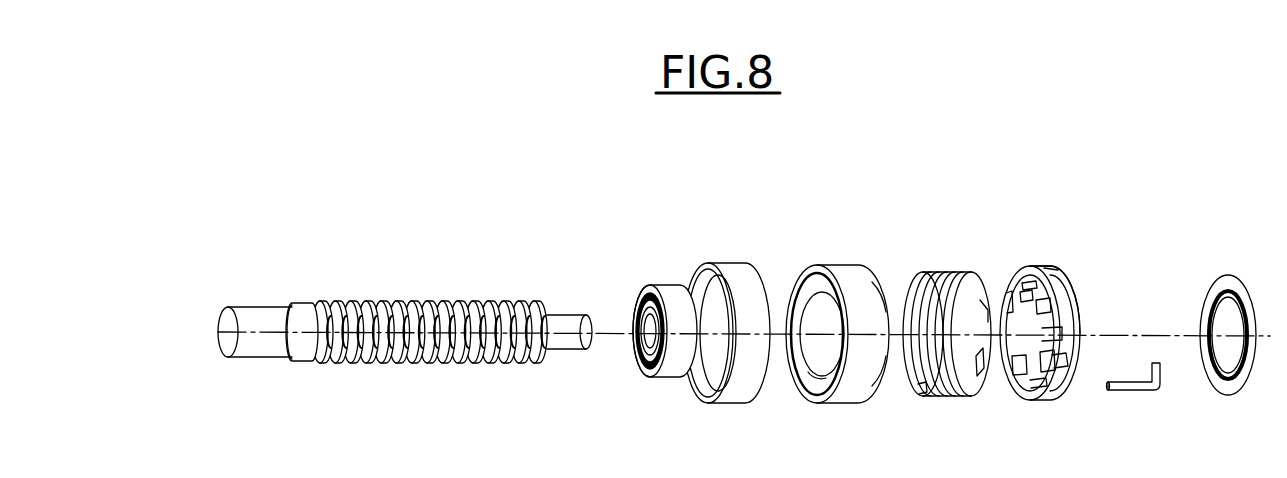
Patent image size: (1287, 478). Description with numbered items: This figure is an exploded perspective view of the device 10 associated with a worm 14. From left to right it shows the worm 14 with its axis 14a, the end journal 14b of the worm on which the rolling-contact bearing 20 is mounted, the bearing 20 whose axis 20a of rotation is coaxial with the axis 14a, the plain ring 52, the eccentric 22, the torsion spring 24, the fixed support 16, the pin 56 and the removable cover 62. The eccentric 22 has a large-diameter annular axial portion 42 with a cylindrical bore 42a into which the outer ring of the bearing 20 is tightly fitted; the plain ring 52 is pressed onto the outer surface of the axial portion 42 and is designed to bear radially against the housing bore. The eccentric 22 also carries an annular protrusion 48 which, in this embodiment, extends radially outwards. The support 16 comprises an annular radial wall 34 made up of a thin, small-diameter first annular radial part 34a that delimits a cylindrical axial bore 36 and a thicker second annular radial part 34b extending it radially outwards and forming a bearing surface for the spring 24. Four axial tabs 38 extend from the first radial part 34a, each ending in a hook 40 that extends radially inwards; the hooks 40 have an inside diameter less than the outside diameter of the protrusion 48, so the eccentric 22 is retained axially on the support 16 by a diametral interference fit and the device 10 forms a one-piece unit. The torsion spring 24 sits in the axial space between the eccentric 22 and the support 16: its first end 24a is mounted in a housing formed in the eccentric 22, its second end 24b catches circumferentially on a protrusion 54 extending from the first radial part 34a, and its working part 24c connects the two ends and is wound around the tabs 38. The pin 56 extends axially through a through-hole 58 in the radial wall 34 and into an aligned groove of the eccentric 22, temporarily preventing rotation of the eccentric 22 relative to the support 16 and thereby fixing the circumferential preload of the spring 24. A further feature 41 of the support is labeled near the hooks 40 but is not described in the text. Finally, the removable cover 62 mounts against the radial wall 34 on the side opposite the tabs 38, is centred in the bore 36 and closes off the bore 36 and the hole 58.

The device 10 is at (821, 246).
The shaft 14 is at (335, 300).
The axis of the worm 14a is at (184, 332).
The end journal of the worm 14b is at (573, 315).
The support 16 is at (1065, 263).
The rolling-contact bearing 20 is at (665, 382).
The axis of rotation of the bearing 20a is at (218, 332).
The eccentric 22 is at (833, 354).
The torsion spring 24 is at (943, 350).
The first end of the spring 24a is at (920, 388).
The second end of the spring 24b is at (985, 308).
The working part of the spring 24c is at (975, 385).
The annular radial wall 34 is at (1057, 319).
The first annular radial part 34a is at (1065, 283).
The second annular radial part 34b is at (1025, 285).
The cylindrical axial bore 36 is at (1078, 322).
The axial tabs 38 is at (1035, 270).
The hook 40 is at (1005, 290).
The rib 41 is at (1052, 272).
The large-diameter annular axial portion 42 is at (842, 290).
The cylindrical bore 42a is at (797, 385).
The annular protrusion 48 is at (877, 302).
The plain ring 52 is at (722, 404).
The protrusion 54 is at (1066, 360).
The pin 56 is at (1135, 392).
The through-hole 58 is at (1035, 378).
The removable cover 62 is at (1240, 275).